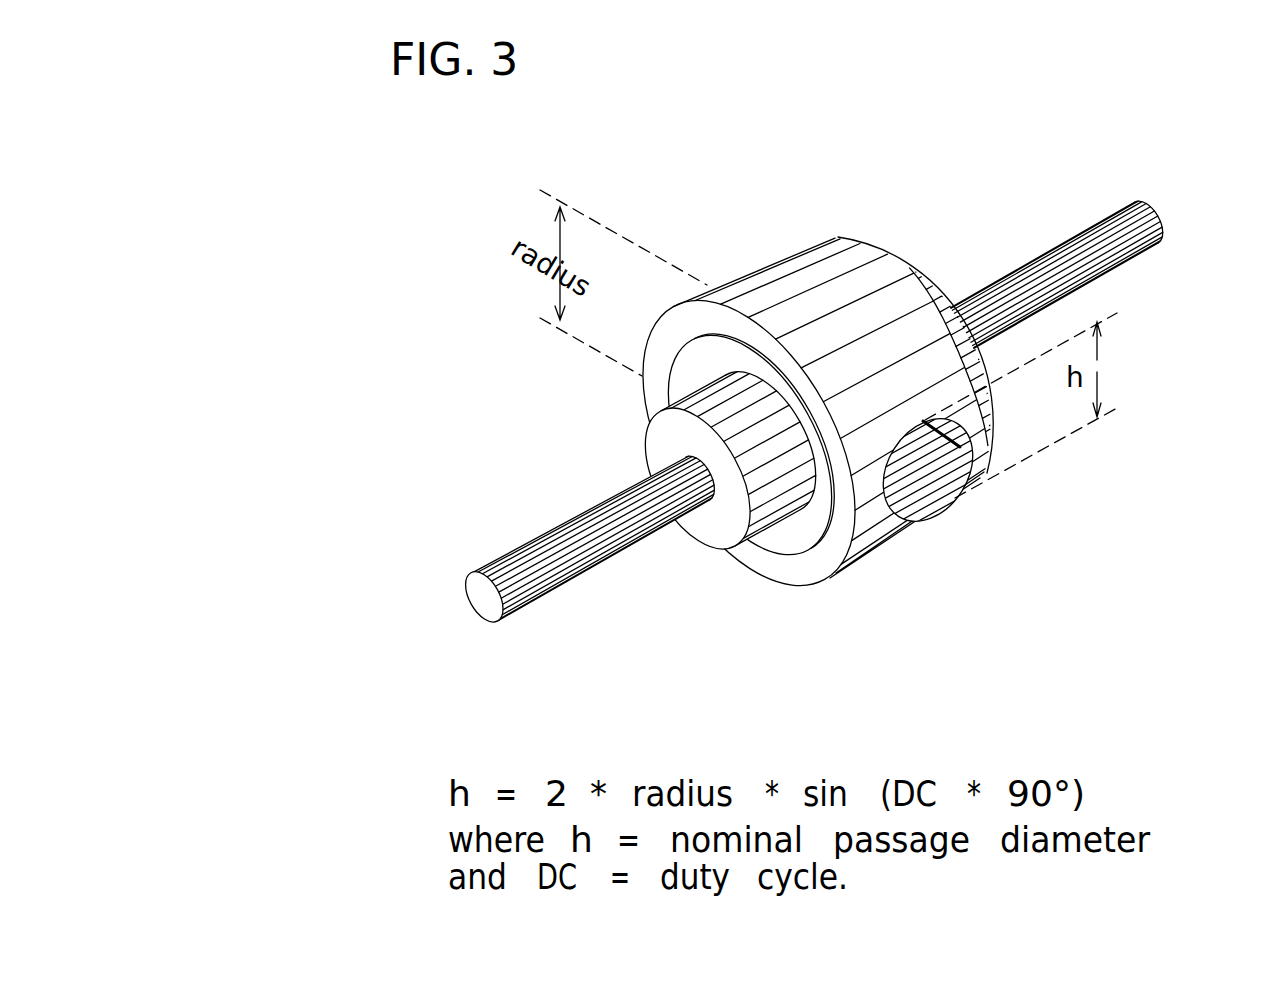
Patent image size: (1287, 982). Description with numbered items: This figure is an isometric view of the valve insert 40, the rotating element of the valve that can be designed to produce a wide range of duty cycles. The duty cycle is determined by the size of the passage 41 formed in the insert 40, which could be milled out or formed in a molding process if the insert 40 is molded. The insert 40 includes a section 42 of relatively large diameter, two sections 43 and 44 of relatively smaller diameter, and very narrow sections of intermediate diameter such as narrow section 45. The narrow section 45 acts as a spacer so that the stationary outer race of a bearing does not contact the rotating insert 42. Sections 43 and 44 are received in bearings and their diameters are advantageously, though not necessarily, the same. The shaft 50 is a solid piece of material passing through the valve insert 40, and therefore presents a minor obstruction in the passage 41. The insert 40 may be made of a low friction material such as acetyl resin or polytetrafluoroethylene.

The valve insert 40 is at (764, 265).
The passage 41 is at (927, 497).
The section of relatively large diameter 42 is at (835, 557).
The section of relatively smaller diameter 43 is at (655, 453).
The section of relatively smaller diameter 44 is at (978, 357).
The narrow section of intermediate diameter 45 is at (777, 540).
The shaft 50 is at (573, 518).